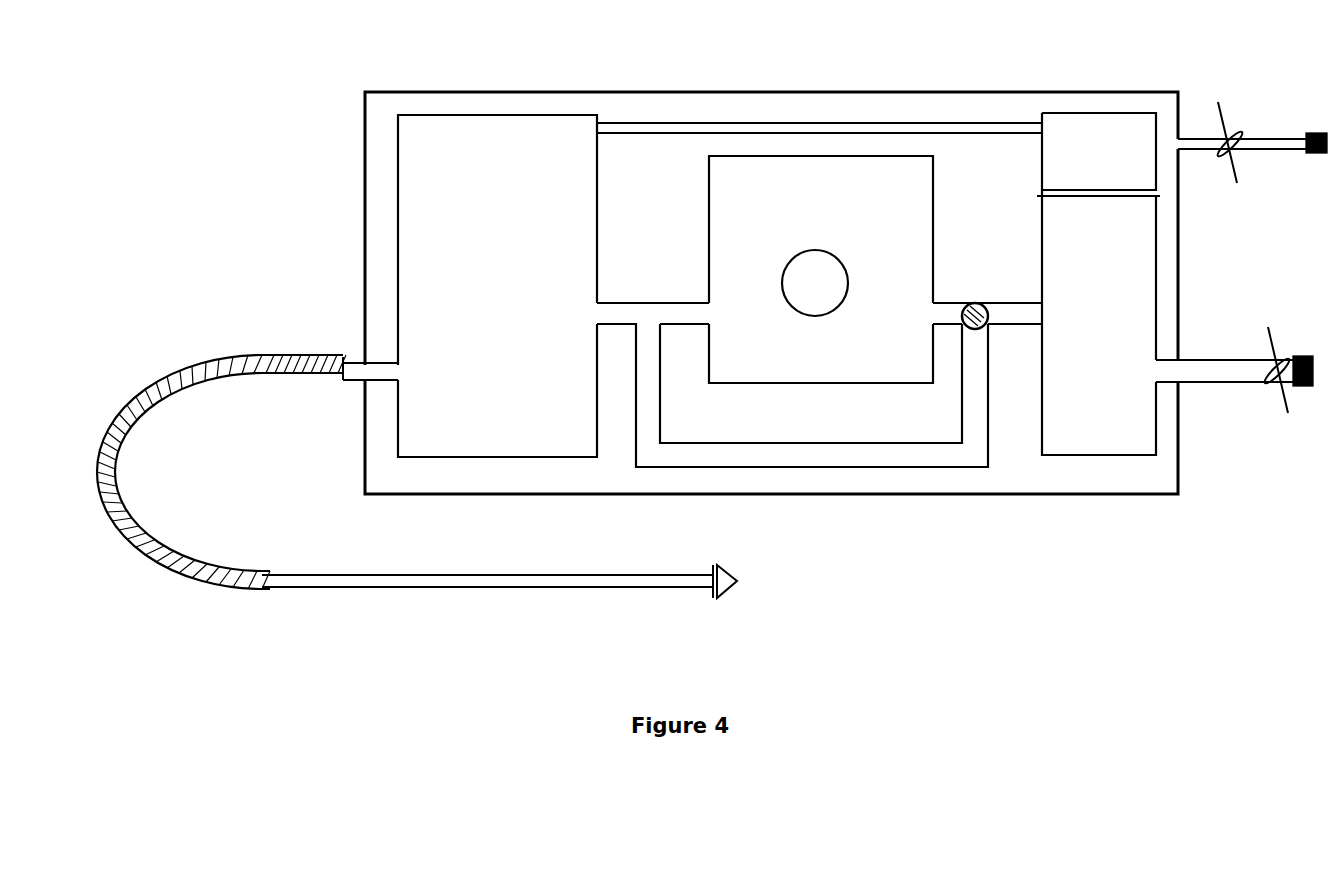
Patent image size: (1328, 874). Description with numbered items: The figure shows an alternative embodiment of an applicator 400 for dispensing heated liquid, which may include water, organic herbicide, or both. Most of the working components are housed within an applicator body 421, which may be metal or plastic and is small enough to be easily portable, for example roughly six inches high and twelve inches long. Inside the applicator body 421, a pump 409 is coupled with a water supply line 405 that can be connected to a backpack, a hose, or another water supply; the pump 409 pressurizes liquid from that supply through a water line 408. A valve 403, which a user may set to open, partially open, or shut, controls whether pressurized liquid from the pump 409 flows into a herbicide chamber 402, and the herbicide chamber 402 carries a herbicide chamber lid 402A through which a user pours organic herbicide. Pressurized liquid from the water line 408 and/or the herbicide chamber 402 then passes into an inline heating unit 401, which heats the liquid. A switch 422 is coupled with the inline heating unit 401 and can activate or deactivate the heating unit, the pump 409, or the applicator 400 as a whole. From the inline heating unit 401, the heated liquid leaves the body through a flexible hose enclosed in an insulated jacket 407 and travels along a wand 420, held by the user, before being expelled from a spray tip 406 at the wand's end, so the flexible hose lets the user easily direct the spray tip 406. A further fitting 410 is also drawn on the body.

The applicator 400 is at (306, 64).
The inline heating unit 401 is at (410, 212).
The herbicide chamber 402 is at (755, 215).
The herbicide chamber lid 402A is at (805, 290).
The valve 403 is at (968, 302).
The water supply line 405 is at (1228, 373).
The spray tip 406 is at (733, 590).
The insulated jacket 407 is at (220, 583).
The water line 408 is at (810, 457).
The pump 409 is at (1090, 413).
The inlet port 410 is at (1285, 138).
The wand 420 is at (560, 608).
The applicator body 421 is at (975, 497).
The switch 422 is at (1090, 135).